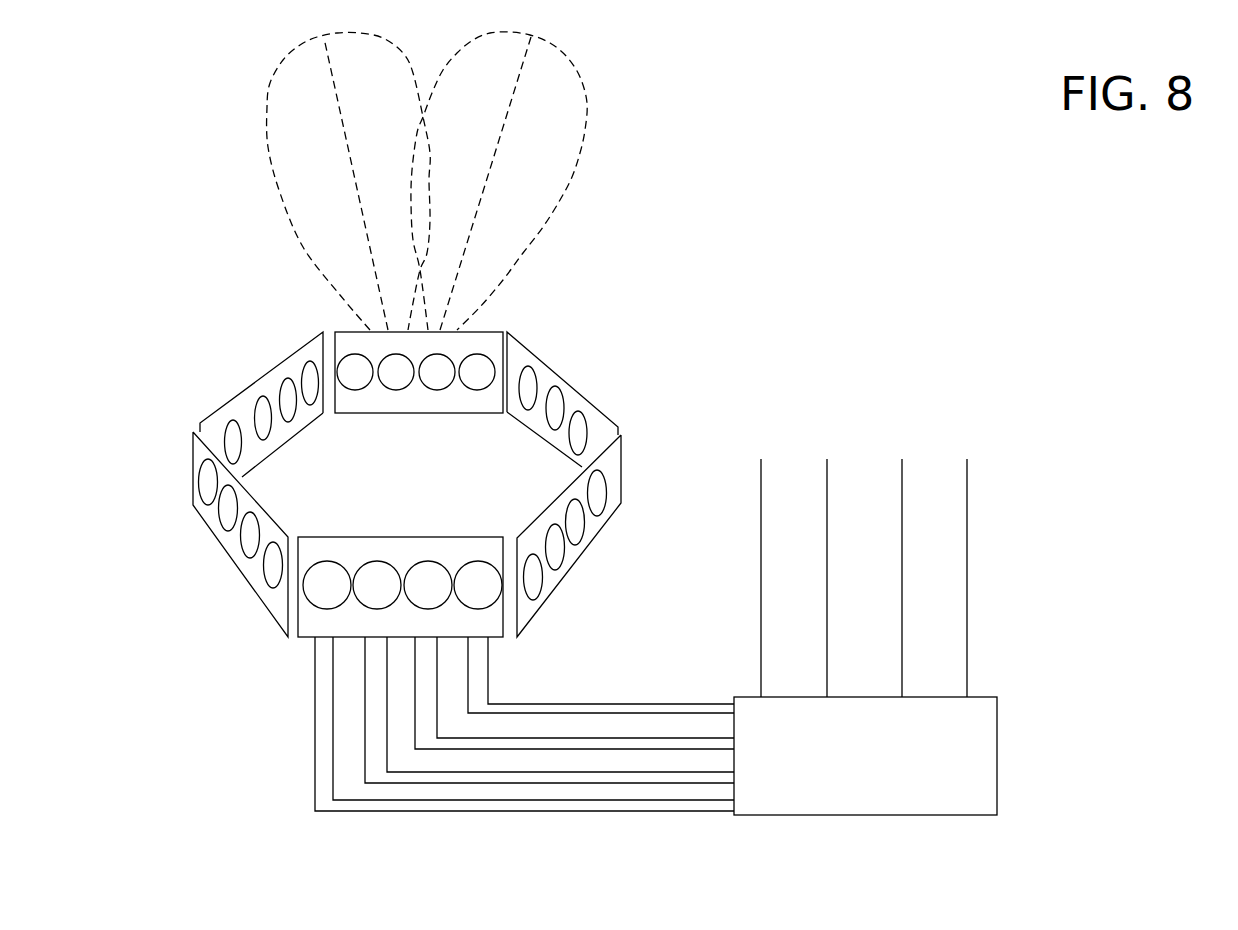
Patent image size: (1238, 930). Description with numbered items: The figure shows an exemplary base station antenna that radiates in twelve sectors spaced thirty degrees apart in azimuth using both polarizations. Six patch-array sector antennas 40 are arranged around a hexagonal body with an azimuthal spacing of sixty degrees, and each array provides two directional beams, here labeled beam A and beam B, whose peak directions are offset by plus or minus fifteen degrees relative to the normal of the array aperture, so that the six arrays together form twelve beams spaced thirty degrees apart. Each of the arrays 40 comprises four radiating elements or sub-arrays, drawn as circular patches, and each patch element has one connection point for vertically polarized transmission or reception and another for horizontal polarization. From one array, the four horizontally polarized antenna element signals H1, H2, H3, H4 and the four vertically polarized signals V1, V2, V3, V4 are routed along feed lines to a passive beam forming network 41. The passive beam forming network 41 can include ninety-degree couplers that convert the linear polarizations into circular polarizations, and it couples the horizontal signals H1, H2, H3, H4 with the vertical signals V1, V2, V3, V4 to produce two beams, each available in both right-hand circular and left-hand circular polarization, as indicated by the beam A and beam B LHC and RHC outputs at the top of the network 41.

The patch-array sector antenna 40 is at (397, 512).
The passive beam forming network 41 is at (952, 815).
The vertically polarized signal V1 is at (313, 683).
The horizontally polarized antenna element signal H1 is at (333, 682).
The vertically polarized signal V2 is at (366, 690).
The horizontally polarized antenna element signal H2 is at (388, 690).
The vertically polarized signal V3 is at (415, 682).
The horizontally polarized antenna element signal H3 is at (438, 682).
The vertically polarized signal V4 is at (469, 690).
The horizontally polarized antenna element signal H4 is at (497, 703).